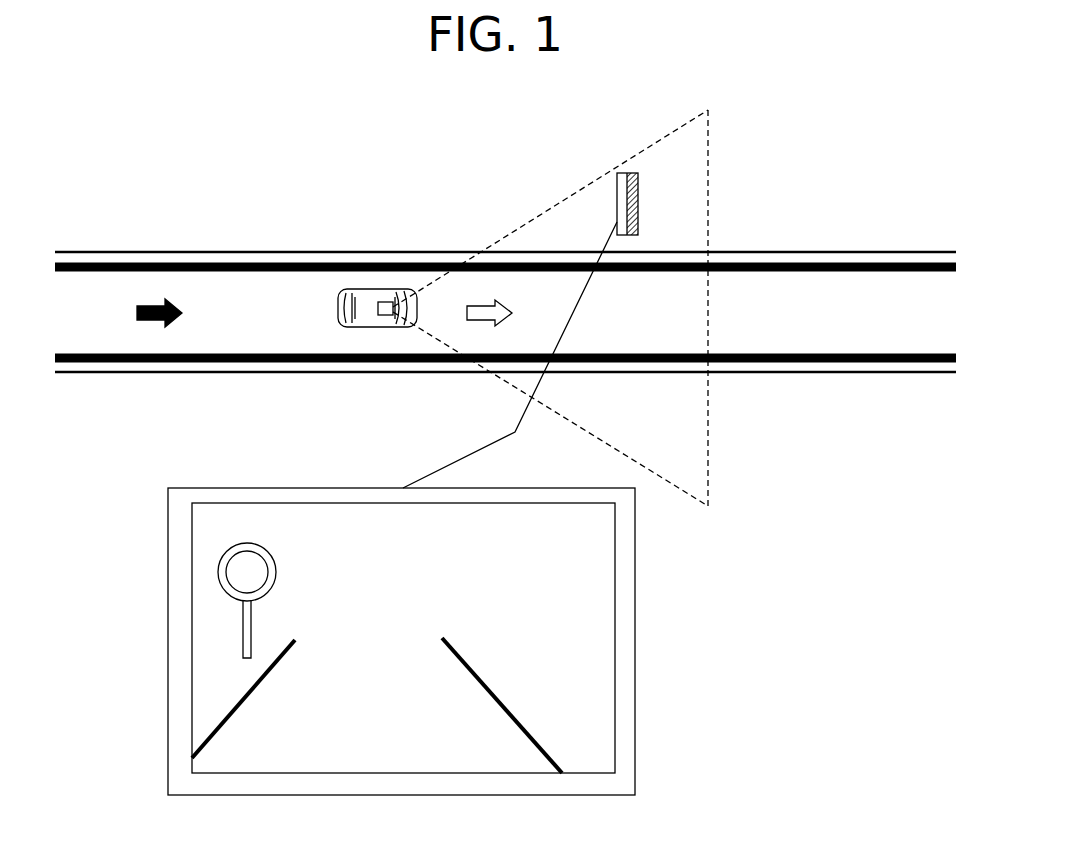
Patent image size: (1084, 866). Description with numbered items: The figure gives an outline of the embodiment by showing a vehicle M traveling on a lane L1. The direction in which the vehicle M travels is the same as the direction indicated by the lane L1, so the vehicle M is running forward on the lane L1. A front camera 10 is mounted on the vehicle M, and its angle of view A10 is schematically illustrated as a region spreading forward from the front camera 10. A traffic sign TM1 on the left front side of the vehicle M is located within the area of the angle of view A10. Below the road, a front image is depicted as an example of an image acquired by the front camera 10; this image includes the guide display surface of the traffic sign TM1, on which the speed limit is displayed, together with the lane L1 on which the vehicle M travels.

The lane L1 is at (90, 279).
The vehicle M is at (388, 292).
The front camera 10 is at (366, 337).
The angle of view A10 is at (545, 206).
The traffic sign TM1 is at (617, 178).